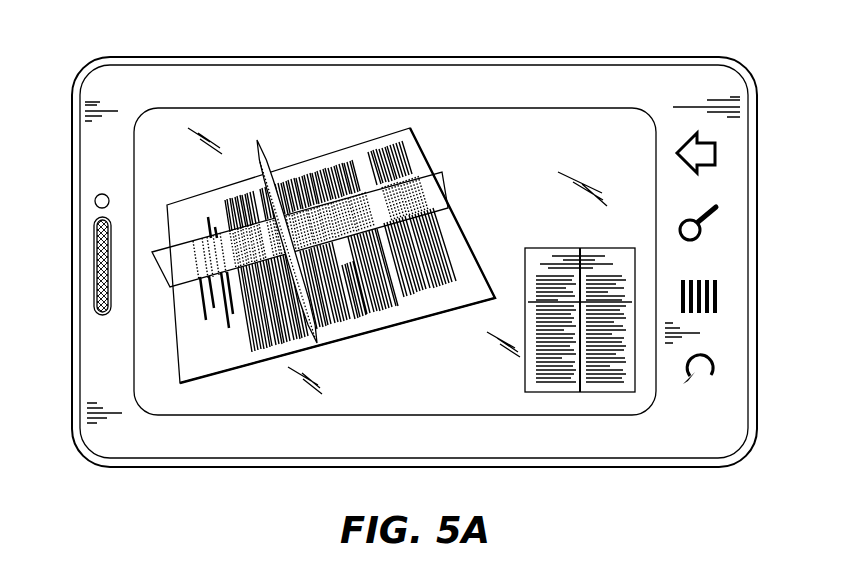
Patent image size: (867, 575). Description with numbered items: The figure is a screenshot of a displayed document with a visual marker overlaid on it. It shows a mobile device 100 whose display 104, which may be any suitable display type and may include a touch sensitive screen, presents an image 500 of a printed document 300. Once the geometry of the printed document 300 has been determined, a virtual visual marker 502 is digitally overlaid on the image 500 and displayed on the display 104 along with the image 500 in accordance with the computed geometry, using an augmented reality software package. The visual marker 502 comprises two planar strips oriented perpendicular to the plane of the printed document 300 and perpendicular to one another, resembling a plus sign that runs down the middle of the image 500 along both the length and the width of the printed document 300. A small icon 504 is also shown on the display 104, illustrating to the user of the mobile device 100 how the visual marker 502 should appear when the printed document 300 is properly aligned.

The mobile device 100 is at (117, 52).
The display 104 is at (218, 398).
The printed document 300 is at (372, 151).
The image 500 is at (246, 140).
The visual marker 502 is at (449, 187).
The small icon 504 is at (598, 388).